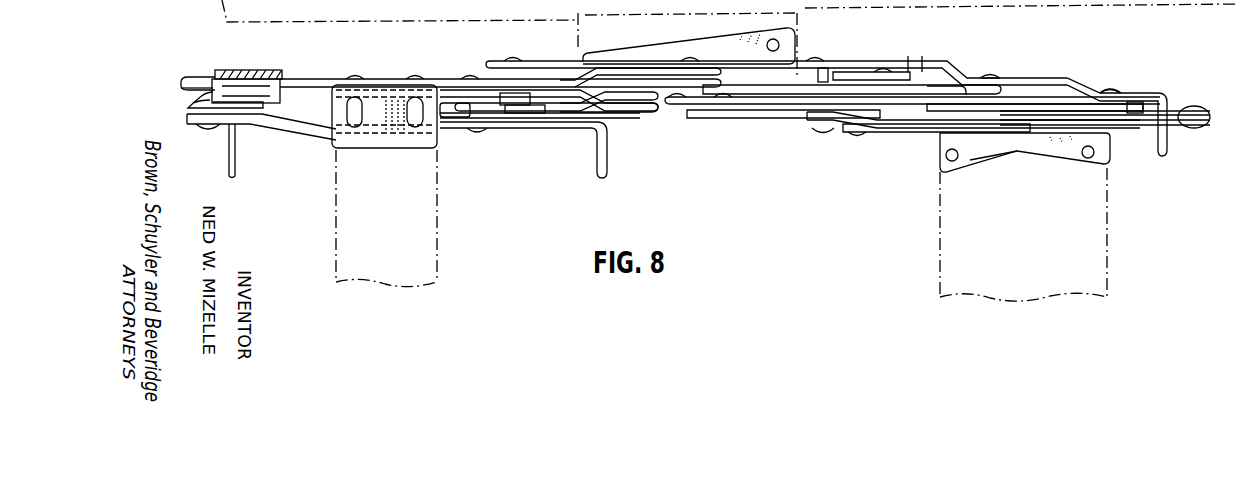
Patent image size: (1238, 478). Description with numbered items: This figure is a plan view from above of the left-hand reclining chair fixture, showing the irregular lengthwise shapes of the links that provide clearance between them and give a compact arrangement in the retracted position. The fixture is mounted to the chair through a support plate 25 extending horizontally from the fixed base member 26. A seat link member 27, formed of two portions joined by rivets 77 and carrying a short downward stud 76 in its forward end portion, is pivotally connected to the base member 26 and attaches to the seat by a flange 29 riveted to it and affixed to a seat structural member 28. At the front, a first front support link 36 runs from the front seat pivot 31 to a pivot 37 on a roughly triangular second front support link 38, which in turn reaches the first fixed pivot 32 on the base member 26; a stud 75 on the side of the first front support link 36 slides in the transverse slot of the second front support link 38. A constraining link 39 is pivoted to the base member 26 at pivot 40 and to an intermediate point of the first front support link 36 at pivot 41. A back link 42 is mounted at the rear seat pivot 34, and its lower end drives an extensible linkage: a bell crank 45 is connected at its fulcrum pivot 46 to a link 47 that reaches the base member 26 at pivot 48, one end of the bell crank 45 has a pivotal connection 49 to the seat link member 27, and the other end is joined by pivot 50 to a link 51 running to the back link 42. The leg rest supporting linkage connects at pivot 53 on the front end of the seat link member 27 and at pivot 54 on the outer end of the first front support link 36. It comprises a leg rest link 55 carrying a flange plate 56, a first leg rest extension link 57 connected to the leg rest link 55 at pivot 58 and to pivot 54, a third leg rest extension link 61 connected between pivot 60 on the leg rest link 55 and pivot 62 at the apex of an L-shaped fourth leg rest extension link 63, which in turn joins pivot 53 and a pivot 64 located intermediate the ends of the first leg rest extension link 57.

The support plate 25 is at (790, 45).
The base member 26 is at (183, 78).
The seat link member 27 is at (315, 80).
The seat structural member 28 is at (345, 208).
The flange 29 is at (418, 150).
The front seat pivot 31 is at (993, 77).
The first fixed pivot 32 is at (893, 83).
The rear seat pivot 34 is at (256, 70).
The first front support link 36 is at (943, 100).
The pivot 37 is at (725, 105).
The second front support link 38 is at (858, 86).
The constraining link 39 is at (650, 115).
The pivot 40 is at (552, 112).
The pivot 41 is at (912, 80).
The back link 42 is at (193, 105).
The bell crank 45 is at (608, 112).
The pivot 46 is at (513, 113).
The link 47 is at (490, 97).
The pivot 48 is at (440, 107).
The pivotal connection 49 is at (630, 80).
The pivot 50 is at (478, 133).
The link 51 is at (320, 130).
The pivot 53 is at (1110, 90).
The pivot 54 is at (682, 105).
The leg rest link 55 is at (1020, 150).
The flange plate 56 is at (990, 148).
The first leg rest extension link 57 is at (1050, 102).
The pivot 58 is at (1133, 130).
The pivot 60 is at (1192, 107).
The third leg rest extension link 61 is at (890, 132).
The pivot 62 is at (857, 138).
The fourth leg rest extension link 63 is at (930, 128).
The pivot 64 is at (822, 132).
The stud 75 is at (790, 110).
The stud 76 is at (820, 62).
The rivets 77 is at (513, 62).